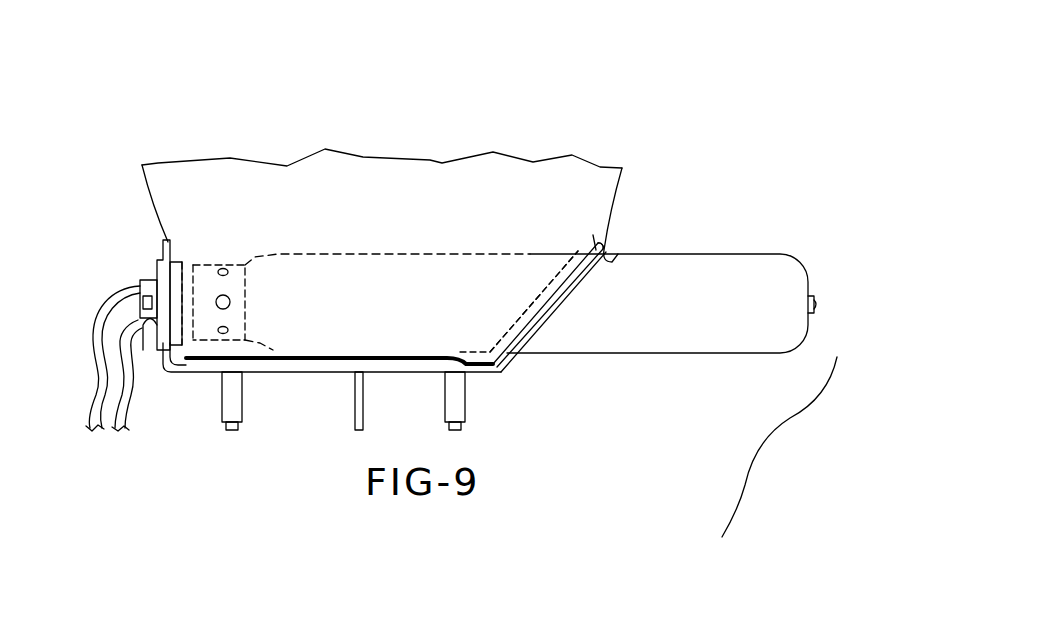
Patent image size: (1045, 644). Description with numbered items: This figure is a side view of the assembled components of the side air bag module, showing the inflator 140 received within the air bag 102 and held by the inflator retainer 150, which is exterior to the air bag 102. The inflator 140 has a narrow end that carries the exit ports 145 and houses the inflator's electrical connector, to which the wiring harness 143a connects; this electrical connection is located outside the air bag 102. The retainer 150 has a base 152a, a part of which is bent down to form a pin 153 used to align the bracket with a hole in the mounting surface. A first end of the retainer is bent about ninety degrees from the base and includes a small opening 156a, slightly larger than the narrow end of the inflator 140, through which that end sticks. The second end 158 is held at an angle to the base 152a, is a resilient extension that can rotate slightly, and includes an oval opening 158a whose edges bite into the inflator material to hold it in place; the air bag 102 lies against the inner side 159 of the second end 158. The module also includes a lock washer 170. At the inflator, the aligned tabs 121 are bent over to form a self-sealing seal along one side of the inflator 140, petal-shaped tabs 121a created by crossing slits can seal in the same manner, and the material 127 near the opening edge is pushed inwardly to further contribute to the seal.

The air bag 102 is at (452, 188).
The inflator 140 is at (350, 268).
The exit ports 145 is at (225, 300).
The lock washer 170 is at (157, 262).
The wiring harness 143a is at (140, 278).
The small opening 156a is at (143, 318).
The inflator retainer 150 is at (255, 365).
The base 152a is at (320, 372).
The pin 153 is at (410, 440).
The second end 158 is at (558, 305).
The oval opening 158a is at (604, 258).
The inner side 159 is at (592, 233).
The tabs 121 is at (500, 376).
The tabs 121a is at (534, 301).
The material 127 is at (543, 325).